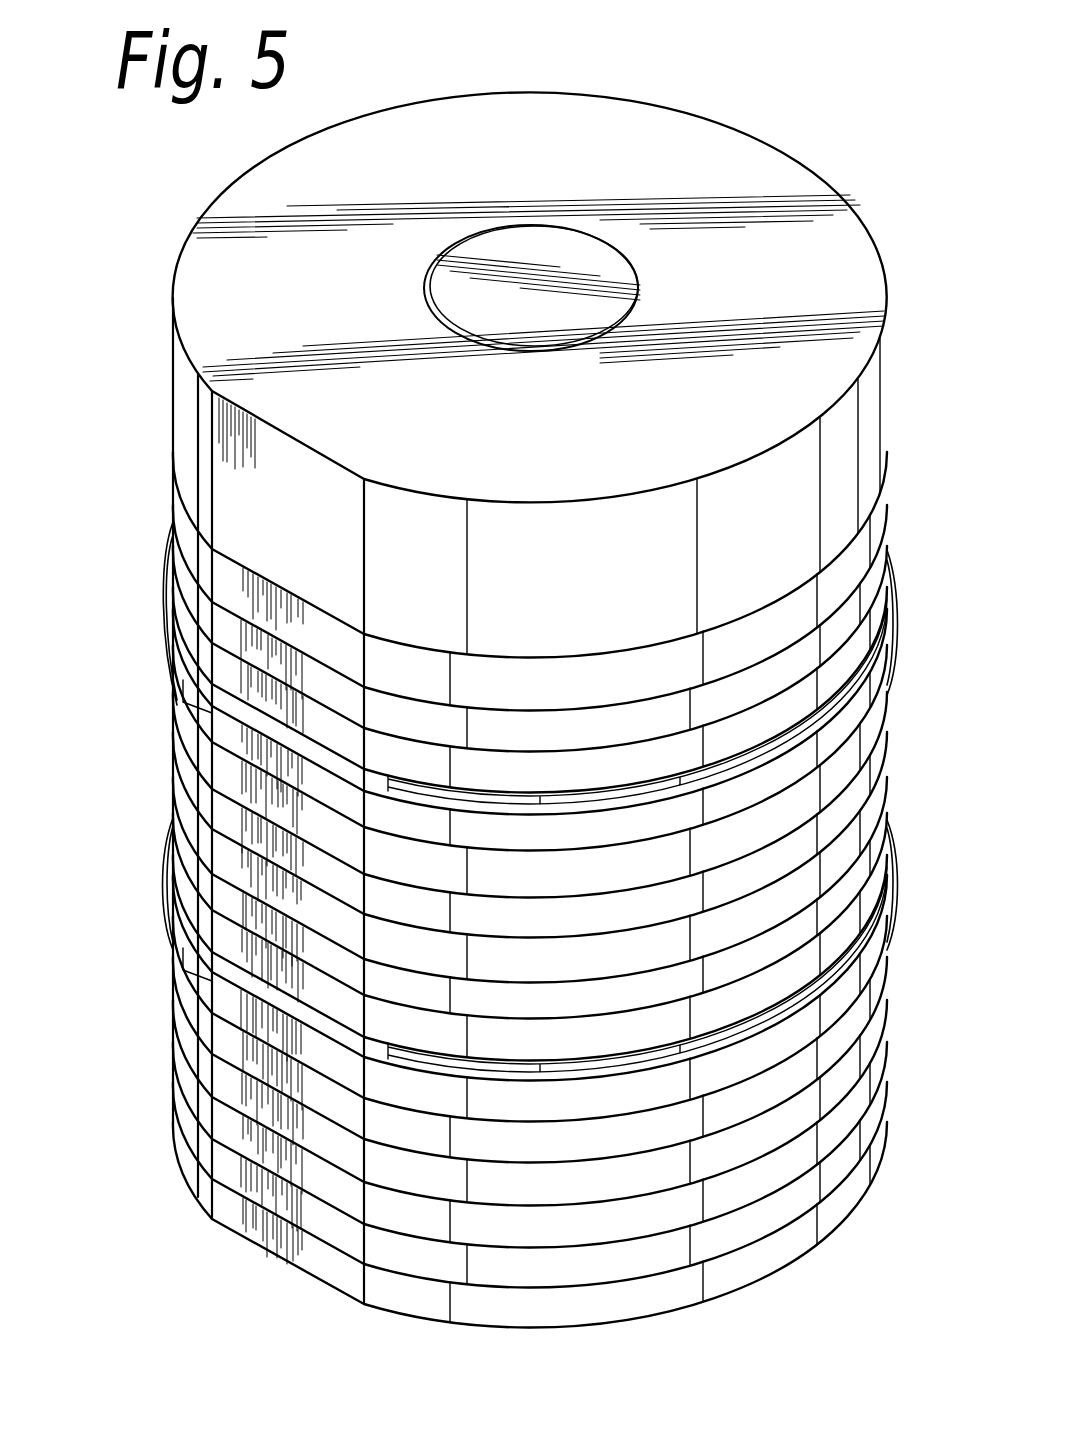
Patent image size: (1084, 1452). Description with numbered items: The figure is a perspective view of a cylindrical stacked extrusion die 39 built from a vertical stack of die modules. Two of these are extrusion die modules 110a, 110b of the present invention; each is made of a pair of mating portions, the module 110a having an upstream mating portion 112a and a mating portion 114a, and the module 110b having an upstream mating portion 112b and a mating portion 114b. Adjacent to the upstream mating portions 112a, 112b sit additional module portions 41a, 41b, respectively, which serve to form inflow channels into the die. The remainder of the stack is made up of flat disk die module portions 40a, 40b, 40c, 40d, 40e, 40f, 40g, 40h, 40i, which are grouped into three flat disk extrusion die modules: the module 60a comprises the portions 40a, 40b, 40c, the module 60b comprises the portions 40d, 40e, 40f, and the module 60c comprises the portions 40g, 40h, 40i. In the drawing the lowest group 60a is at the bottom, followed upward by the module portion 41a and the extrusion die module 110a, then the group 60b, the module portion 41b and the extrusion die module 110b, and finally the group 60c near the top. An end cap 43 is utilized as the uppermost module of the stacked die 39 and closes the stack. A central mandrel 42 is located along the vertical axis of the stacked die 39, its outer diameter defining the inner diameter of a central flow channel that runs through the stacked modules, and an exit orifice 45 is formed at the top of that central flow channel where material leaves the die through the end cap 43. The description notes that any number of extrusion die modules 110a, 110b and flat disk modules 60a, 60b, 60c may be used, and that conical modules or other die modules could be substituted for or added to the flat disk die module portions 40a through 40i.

The cylindrical stacked extrusion die 39 is at (792, 97).
The central mandrel 42 is at (562, 252).
The end cap 43 is at (246, 290).
The exit orifice 45 is at (462, 240).
The flat disk die module portion 40a is at (250, 1207).
The flat disk die module portion 40b is at (250, 1167).
The flat disk die module portion 40c is at (250, 1129).
The flat disk die module portion 40d is at (250, 1082).
The flat disk die module portion 40e is at (250, 1037).
The flat disk die module portion 40f is at (250, 989).
The flat disk die module portion 40g is at (250, 676).
The flat disk die module portion 40h is at (250, 631).
The flat disk die module portion 40i is at (250, 580).
The additional module portion 41a is at (250, 941).
The additional module portion 41b is at (250, 722).
The flat disk extrusion die module 60a is at (78, 1110).
The flat disk extrusion die module 60b is at (78, 975).
The flat disk extrusion die module 60c is at (78, 565).
The extrusion die module 110a is at (78, 905).
The extrusion die module 110b is at (78, 755).
The upstream mating portion 112a is at (250, 892).
The upstream mating portion 112b is at (250, 772).
The mating portion 114a is at (250, 857).
The mating portion 114b is at (250, 816).